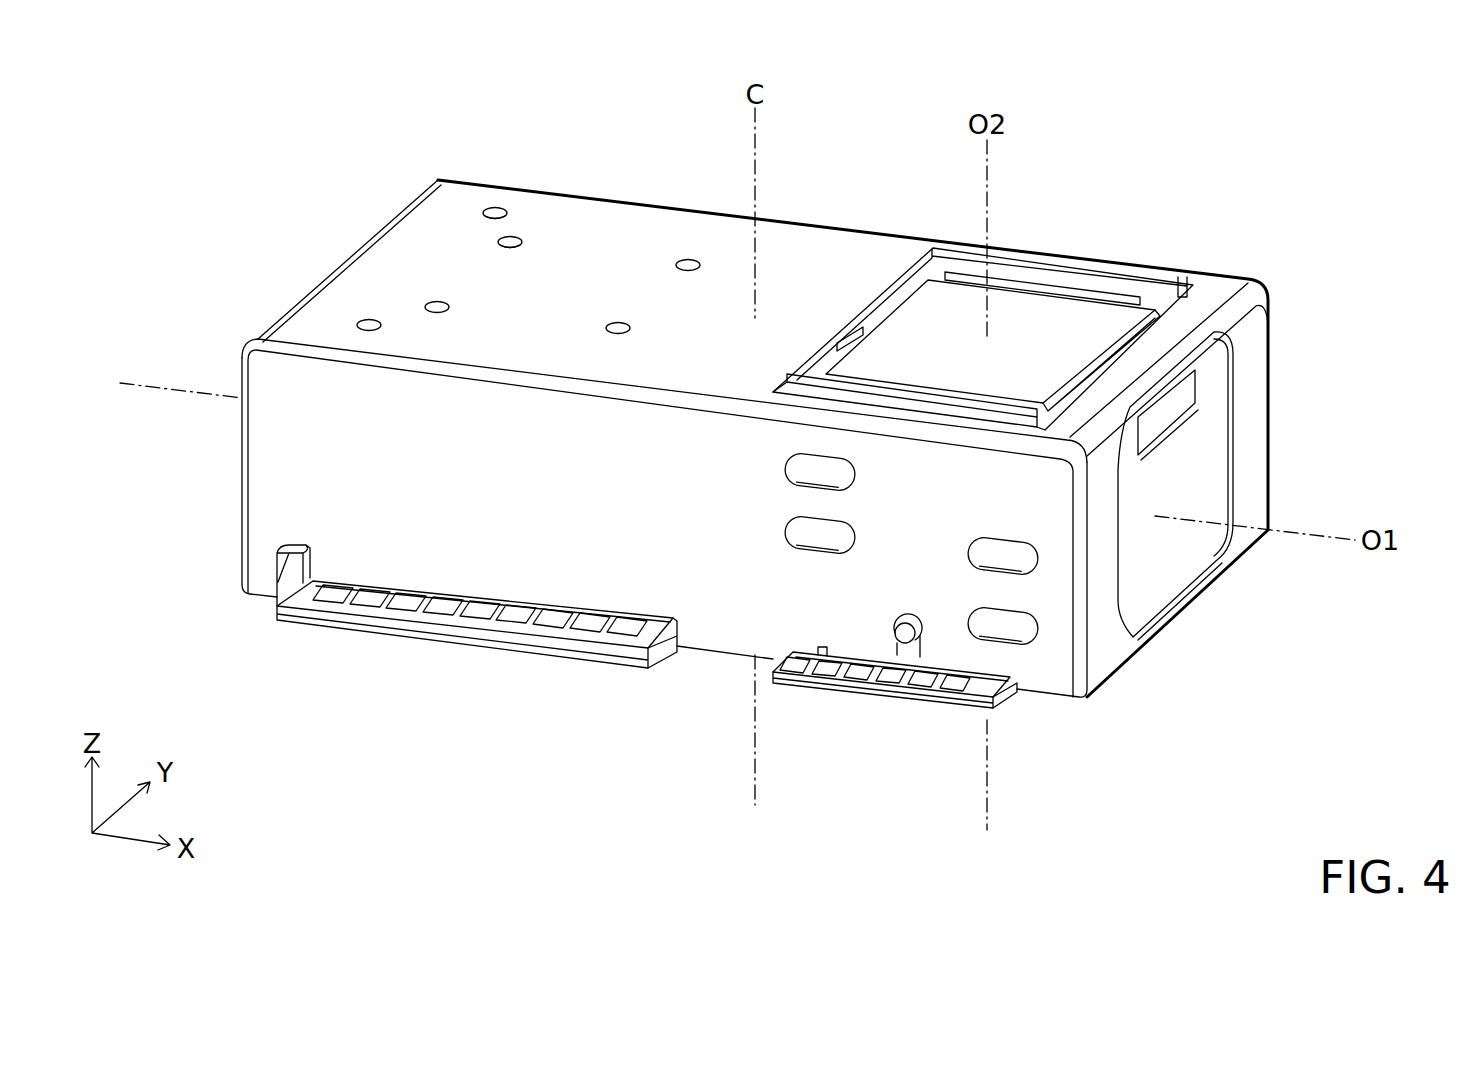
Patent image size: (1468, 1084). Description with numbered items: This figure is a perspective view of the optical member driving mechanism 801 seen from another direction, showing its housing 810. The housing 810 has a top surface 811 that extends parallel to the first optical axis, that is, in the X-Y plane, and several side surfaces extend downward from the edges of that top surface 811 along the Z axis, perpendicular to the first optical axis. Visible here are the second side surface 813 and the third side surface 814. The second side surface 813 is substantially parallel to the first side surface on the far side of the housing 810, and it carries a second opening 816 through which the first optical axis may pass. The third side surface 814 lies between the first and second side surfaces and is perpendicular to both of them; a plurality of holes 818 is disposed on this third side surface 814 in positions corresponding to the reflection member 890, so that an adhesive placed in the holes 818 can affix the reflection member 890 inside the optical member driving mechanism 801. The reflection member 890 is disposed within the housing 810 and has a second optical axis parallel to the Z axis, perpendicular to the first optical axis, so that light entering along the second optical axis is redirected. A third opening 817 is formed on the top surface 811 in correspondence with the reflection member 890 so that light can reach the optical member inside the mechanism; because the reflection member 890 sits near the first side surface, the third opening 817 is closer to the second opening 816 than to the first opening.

The optical member driving mechanism 801 is at (262, 62).
The housing 810 is at (1226, 275).
The top surface 811 is at (597, 258).
The second side surface 813 is at (1250, 397).
The third side surface 814 is at (350, 490).
The second opening 816 is at (1220, 542).
The third opening 817 is at (897, 297).
The holes 818 is at (826, 537).
The reflection member 890 is at (1053, 337).